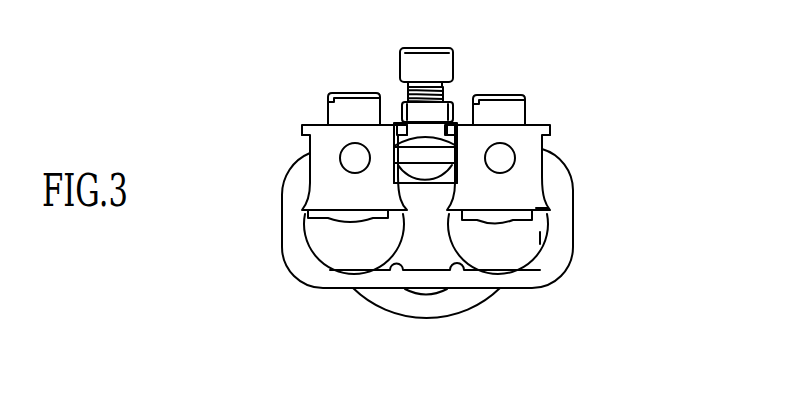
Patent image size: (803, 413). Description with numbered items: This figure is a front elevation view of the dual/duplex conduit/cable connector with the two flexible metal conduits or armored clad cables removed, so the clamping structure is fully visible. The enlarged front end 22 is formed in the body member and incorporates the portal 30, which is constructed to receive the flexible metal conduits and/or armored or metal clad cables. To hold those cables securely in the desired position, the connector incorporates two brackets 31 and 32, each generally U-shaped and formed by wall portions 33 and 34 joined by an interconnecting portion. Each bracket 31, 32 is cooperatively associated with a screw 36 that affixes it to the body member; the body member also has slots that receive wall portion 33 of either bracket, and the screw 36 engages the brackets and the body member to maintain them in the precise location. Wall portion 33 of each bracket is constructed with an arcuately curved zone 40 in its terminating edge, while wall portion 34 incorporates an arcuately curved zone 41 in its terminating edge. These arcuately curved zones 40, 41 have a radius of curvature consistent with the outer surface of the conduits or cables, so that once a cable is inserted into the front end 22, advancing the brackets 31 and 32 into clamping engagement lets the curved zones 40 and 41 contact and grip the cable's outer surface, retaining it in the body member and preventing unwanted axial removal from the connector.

The front end 22 is at (301, 263).
The portal 30 is at (537, 250).
The bracket 31 is at (322, 172).
The bracket 32 is at (535, 135).
The wall portion 33 is at (347, 209).
The wall portion 34 is at (323, 175).
The screw 36 is at (347, 107).
The arcuately curved zone 40 is at (544, 237).
The arcuately curved zone 41 is at (540, 210).